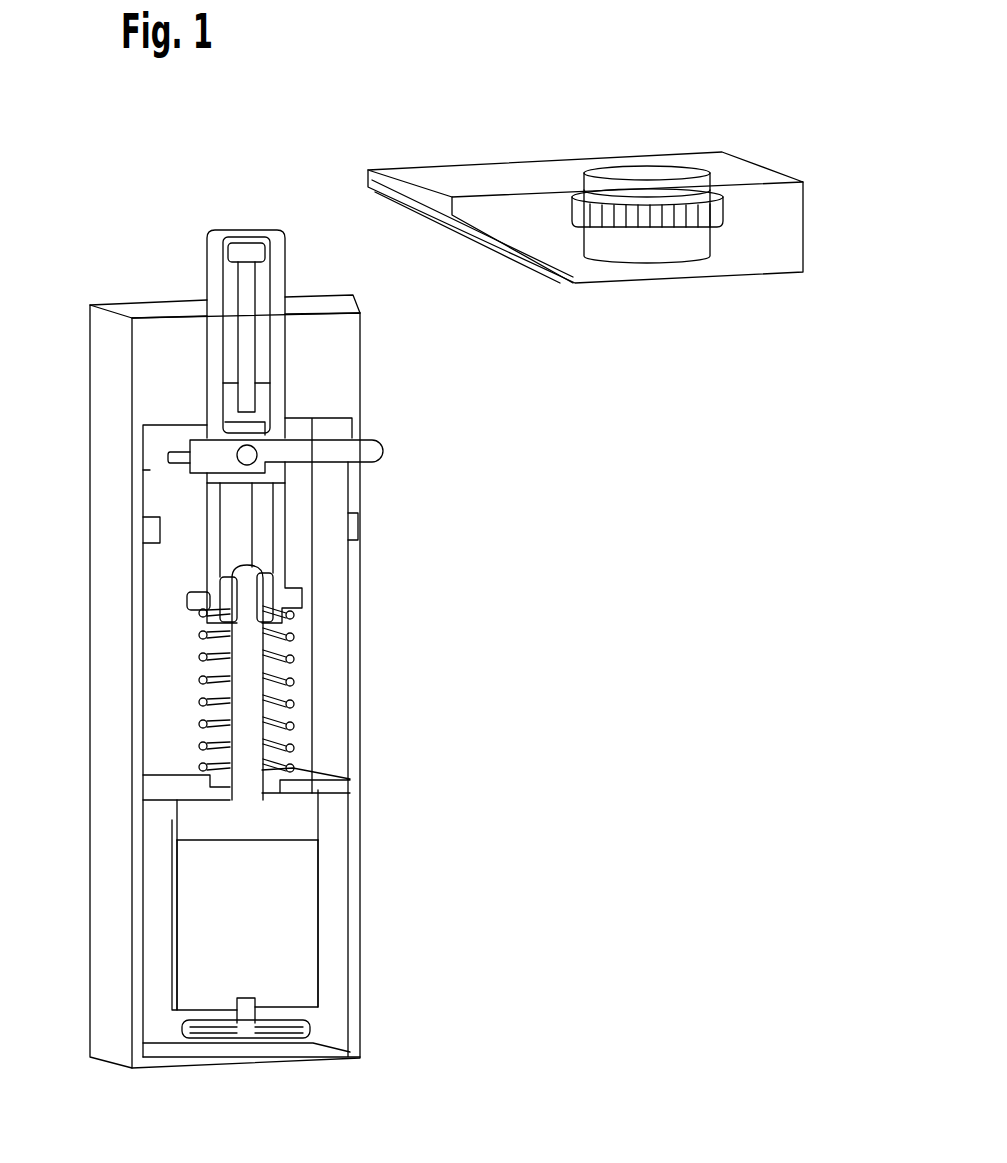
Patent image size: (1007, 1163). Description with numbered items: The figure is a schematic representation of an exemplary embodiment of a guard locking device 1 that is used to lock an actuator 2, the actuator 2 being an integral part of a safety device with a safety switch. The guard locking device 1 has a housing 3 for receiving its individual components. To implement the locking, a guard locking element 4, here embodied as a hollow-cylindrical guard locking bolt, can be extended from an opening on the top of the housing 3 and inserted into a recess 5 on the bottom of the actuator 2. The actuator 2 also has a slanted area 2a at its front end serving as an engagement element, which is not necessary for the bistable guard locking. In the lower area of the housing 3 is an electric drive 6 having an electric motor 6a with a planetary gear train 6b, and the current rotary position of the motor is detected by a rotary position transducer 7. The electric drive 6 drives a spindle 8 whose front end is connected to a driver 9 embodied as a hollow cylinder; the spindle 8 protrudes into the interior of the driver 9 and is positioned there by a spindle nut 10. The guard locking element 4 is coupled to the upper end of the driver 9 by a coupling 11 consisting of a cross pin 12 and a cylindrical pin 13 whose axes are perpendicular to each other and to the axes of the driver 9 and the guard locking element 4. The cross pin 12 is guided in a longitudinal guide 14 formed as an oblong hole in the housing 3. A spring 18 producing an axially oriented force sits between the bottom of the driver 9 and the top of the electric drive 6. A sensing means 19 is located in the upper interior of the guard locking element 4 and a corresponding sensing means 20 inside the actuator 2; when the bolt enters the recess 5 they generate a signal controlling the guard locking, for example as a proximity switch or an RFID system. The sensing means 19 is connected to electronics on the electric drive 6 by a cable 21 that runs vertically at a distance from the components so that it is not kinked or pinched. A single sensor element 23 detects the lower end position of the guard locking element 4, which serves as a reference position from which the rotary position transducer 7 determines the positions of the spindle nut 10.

The guard locking device 1 is at (470, 1041).
The actuator 2 is at (664, 150).
The slanted area 2a is at (508, 255).
The housing 3 is at (325, 300).
The guard locking element 4 is at (276, 222).
The recess 5 is at (585, 228).
The electric drive 6 is at (165, 930).
The electric motor 6a is at (247, 925).
The planetary gear train 6b is at (247, 822).
The rotary position transducer 7 is at (215, 1030).
The spindle 8 is at (230, 640).
The driver 9 is at (277, 573).
The spindle nut 10 is at (222, 588).
The coupling 11 is at (180, 507).
The cross pin 12 is at (385, 450).
The cylindrical pin 13 is at (257, 462).
The longitudinal guide 14 is at (358, 515).
The spring 18 is at (292, 637).
The sensing means 19 is at (232, 240).
The sensing means 20 is at (725, 205).
The cable 21 is at (250, 345).
The sensor element 23 is at (147, 530).